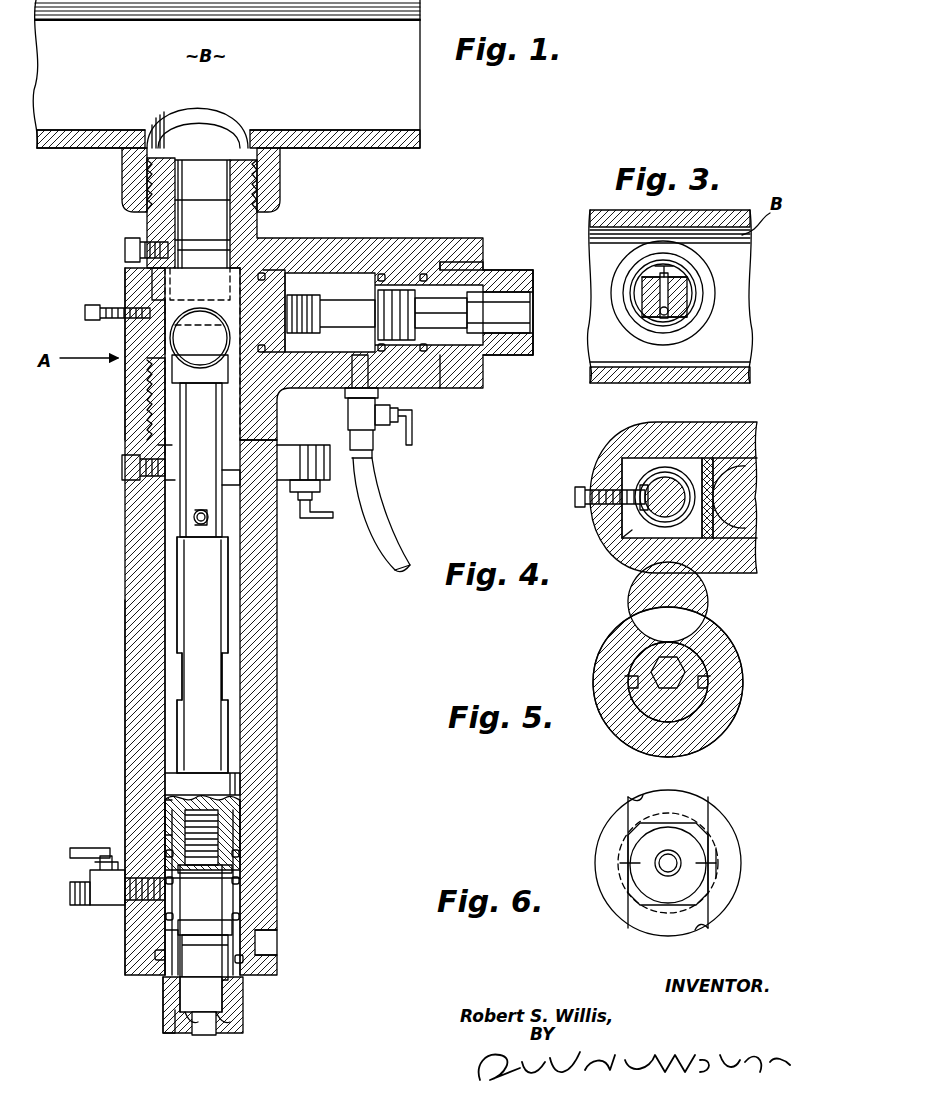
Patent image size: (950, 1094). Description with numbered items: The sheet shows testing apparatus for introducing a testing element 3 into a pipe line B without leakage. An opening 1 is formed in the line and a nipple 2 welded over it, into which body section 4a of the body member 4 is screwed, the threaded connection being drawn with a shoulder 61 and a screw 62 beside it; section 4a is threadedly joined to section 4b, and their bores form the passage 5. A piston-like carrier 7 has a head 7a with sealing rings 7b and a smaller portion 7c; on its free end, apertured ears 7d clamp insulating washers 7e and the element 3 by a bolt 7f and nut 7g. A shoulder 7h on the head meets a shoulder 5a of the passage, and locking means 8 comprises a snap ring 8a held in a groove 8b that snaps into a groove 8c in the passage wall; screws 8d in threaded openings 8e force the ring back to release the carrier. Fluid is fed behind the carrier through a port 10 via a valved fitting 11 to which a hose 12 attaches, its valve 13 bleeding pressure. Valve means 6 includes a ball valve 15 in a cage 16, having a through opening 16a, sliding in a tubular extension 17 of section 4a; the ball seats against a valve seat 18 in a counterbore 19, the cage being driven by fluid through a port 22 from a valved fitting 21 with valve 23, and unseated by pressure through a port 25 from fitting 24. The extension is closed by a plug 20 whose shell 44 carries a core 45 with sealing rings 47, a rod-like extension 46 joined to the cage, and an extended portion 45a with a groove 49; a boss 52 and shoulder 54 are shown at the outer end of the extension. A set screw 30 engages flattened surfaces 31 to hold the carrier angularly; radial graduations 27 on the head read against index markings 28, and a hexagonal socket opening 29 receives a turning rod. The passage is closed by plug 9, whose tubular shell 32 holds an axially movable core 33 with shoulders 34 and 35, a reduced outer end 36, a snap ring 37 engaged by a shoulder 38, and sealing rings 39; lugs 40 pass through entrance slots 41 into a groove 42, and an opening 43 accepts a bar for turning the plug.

In FIG. 1, the opening 1 is at (232, 127).
In FIG. 3, the opening 1 is at (705, 328).
In FIG. 1, the nipple 2 is at (122, 190).
In FIG. 1, the testing element 3 is at (176, 423).
In FIG. 3, the testing element 3 is at (690, 305).
In FIG. 1, the body member 4 is at (118, 548).
In FIG. 5, the body member 4 is at (610, 628).
In FIG. 6, the body member 4 is at (615, 820).
In FIG. 1, the body section 4a is at (125, 272).
In FIG. 4, the body section 4a is at (605, 458).
In FIG. 1, the body section 4b is at (125, 696).
In FIG. 5, the body section 4b is at (608, 650).
In FIG. 6, the body section 4b is at (720, 816).
In FIG. 1, the passage 5 is at (172, 582).
In FIG. 1, the shoulder 5a is at (265, 432).
In FIG. 1, the valve means 6 is at (165, 341).
In FIG. 1, the carrier 7 is at (232, 627).
In FIG. 1, the head 7a is at (236, 807).
In FIG. 5, the head 7a is at (688, 658).
In FIG. 1, the sealing rings 7b is at (243, 854).
In FIG. 1, the carrier portion 7c is at (205, 723).
In FIG. 4, the carrier portion 7c is at (658, 510).
In FIG. 1, the apertured ears 7d is at (185, 516).
In FIG. 3, the apertured ears 7d is at (678, 290).
In FIG. 3, the washers 7e is at (672, 290).
In FIG. 1, the bolt 7f is at (201, 530).
In FIG. 3, the bolt 7f is at (660, 275).
In FIG. 1, the nut 7g is at (210, 517).
In FIG. 3, the nut 7g is at (668, 320).
In FIG. 1, the shoulder 7h is at (242, 776).
In FIG. 1, the locking means 8 is at (250, 831).
In FIG. 1, the snap ring 8a is at (162, 836).
In FIG. 1, the groove 8b is at (170, 810).
In FIG. 1, the groove 8c is at (160, 484).
In FIG. 1, the screws 8d is at (123, 467).
In FIG. 1, the threaded openings 8e is at (152, 458).
In FIG. 1, the closure plug 9 is at (250, 1013).
In FIG. 6, the closure plug 9 is at (690, 820).
In FIG. 1, the port 10 is at (165, 892).
In FIG. 1, the valved fitting 11 is at (72, 896).
In FIG. 1, the hose 12 is at (382, 523).
In FIG. 1, the valve 13 is at (95, 880).
In FIG. 1, the ball valve 15 is at (202, 354).
In FIG. 4, the ball valve 15 is at (745, 483).
In FIG. 1, the cage 16 is at (290, 270).
In FIG. 4, the cage 16 is at (720, 525).
In FIG. 1, the through opening 16a is at (175, 308).
In FIG. 1, the tubular extension 17 is at (348, 236).
In FIG. 4, the tubular extension 17 is at (716, 430).
In FIG. 1, the valve seat 18 is at (150, 375).
In FIG. 4, the valve seat 18 is at (645, 530).
In FIG. 1, the counterbore 19 is at (147, 395).
In FIG. 1, the plug 20 is at (535, 284).
In FIG. 1, the valved fitting 21 is at (380, 438).
In FIG. 1, the port 22 is at (360, 372).
In FIG. 1, the valve 23 is at (357, 418).
In FIG. 1, the valved fitting 24 is at (303, 475).
In FIG. 1, the port 25 is at (262, 478).
In FIG. 5, the radial graduations 27 is at (630, 680).
In FIG. 6, the index markings 28 is at (720, 858).
In FIG. 1, the socket opening 29 is at (218, 850).
In FIG. 5, the socket opening 29 is at (680, 690).
In FIG. 1, the set screw 30 is at (85, 310).
In FIG. 4, the set screw 30 is at (575, 496).
In FIG. 1, the flattened surfaces 31 is at (180, 662).
In FIG. 4, the flattened surfaces 31 is at (642, 487).
In FIG. 1, the tubular shell 32 is at (244, 993).
In FIG. 6, the tubular shell 32 is at (660, 905).
In FIG. 1, the core 33 is at (210, 968).
In FIG. 1, the shoulder 34 is at (222, 1018).
In FIG. 1, the shoulder 35 is at (193, 1030).
In FIG. 1, the reduced outer end 36 is at (208, 1036).
In FIG. 6, the reduced outer end 36 is at (664, 866).
In FIG. 1, the snap ring 37 is at (235, 869).
In FIG. 1, the shoulder 38 is at (230, 925).
In FIG. 1, the sealing rings 39 is at (160, 945).
In FIG. 1, the lugs 40 is at (252, 943).
In FIG. 6, the lugs 40 is at (635, 831).
In FIG. 6, the entrance slots 41 is at (642, 800).
In FIG. 1, the groove 42 is at (158, 962).
In FIG. 6, the groove 42 is at (620, 853).
In FIG. 1, the opening 43 is at (165, 1002).
In FIG. 1, the tubular shell 44 is at (503, 357).
In FIG. 1, the core 45 is at (485, 300).
In FIG. 1, the core portion 45a is at (500, 320).
In FIG. 1, the rod-like extension 46 is at (350, 322).
In FIG. 1, the sealing rings 47 is at (405, 288).
In FIG. 1, the groove 49 is at (455, 388).
In FIG. 1, the boss 52 is at (445, 265).
In FIG. 1, the shoulder 54 is at (462, 266).
In FIG. 1, the shoulder 61 is at (232, 250).
In FIG. 1, the screw 62 is at (128, 250).